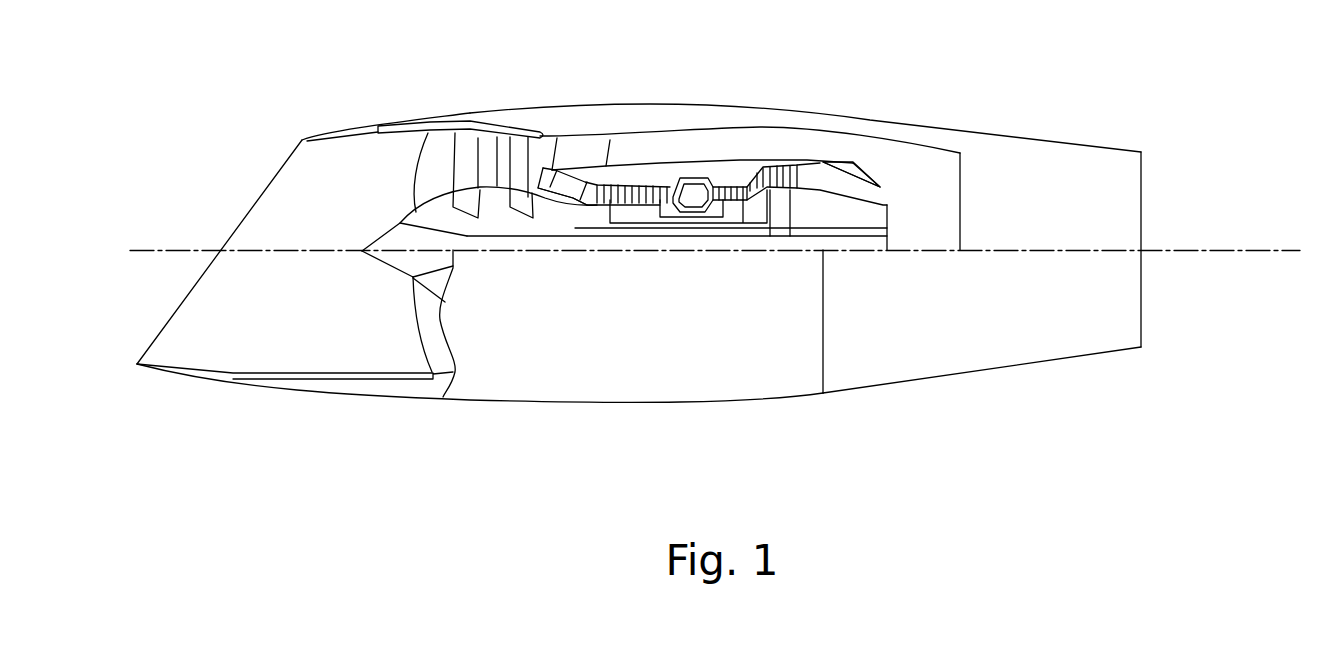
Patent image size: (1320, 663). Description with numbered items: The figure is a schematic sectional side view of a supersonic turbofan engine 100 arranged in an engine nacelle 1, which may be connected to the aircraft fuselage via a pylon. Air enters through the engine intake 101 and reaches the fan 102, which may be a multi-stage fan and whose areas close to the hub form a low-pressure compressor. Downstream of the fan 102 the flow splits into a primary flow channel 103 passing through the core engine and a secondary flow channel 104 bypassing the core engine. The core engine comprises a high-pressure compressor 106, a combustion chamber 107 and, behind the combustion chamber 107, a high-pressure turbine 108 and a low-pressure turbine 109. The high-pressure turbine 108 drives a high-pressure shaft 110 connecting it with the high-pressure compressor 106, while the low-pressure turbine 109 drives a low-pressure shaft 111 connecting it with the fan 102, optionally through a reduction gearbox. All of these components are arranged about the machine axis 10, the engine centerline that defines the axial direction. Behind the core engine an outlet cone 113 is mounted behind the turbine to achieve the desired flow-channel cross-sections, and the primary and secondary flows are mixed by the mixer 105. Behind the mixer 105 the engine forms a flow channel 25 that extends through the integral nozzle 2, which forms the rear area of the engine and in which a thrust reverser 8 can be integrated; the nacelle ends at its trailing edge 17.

The turbofan engine 100 is at (557, 86).
The engine nacelle 1 is at (567, 403).
The nozzle 2 is at (1065, 141).
The thrust reverser 8 is at (902, 383).
The trailing edge 17 is at (1142, 175).
The machine axis 10 is at (250, 252).
The engine intake 101 is at (342, 139).
The fan 102 is at (468, 127).
The secondary flow channel 104 is at (640, 150).
The flow channel 25 is at (941, 170).
The outlet cone 113 is at (890, 198).
The mixer 105 is at (863, 180).
The low-pressure shaft 111 is at (543, 221).
The primary flow channel 103 is at (588, 206).
The combustion chamber 107 is at (695, 180).
The high-pressure compressor 106 is at (643, 206).
The high-pressure shaft 110 is at (690, 216).
The high-pressure turbine 108 is at (755, 202).
The low-pressure turbine 109 is at (780, 195).